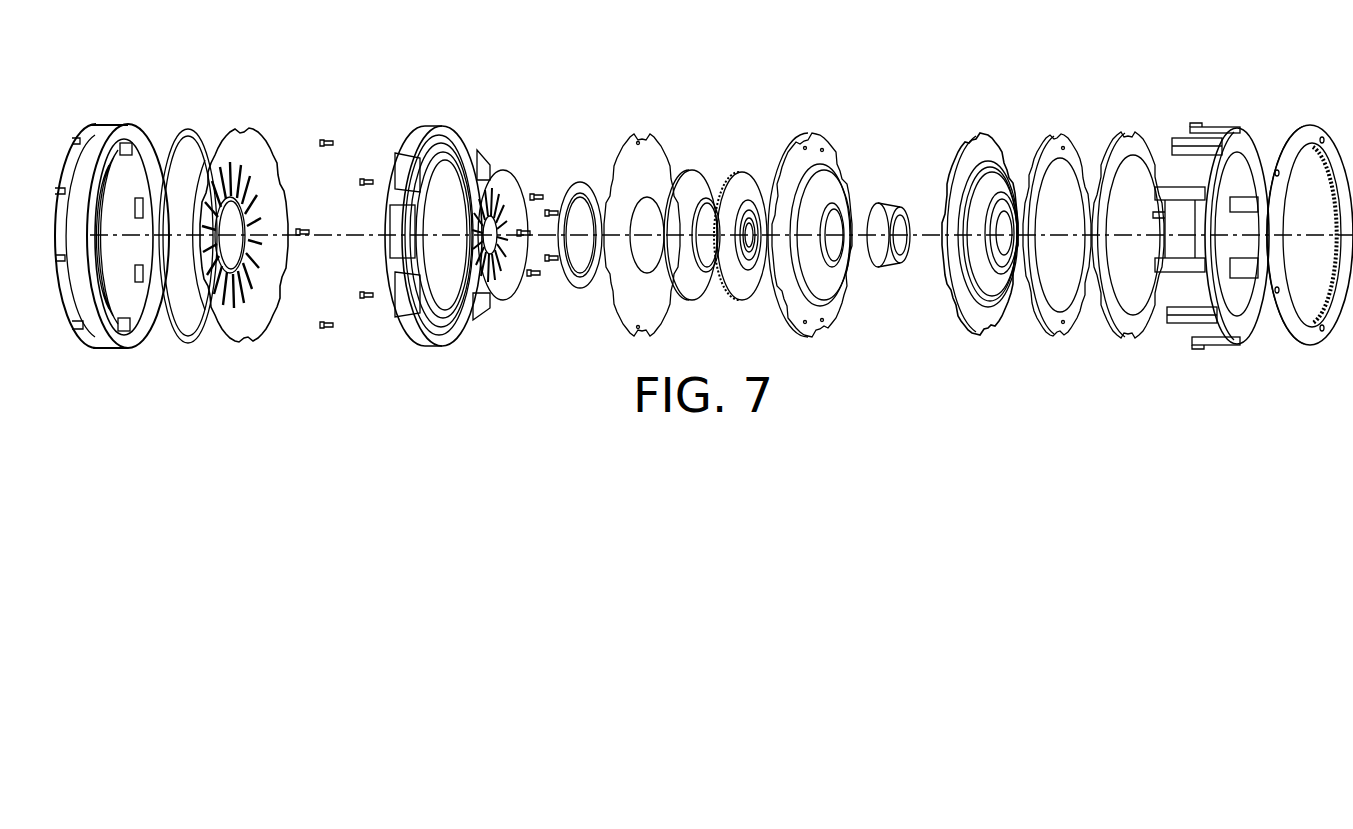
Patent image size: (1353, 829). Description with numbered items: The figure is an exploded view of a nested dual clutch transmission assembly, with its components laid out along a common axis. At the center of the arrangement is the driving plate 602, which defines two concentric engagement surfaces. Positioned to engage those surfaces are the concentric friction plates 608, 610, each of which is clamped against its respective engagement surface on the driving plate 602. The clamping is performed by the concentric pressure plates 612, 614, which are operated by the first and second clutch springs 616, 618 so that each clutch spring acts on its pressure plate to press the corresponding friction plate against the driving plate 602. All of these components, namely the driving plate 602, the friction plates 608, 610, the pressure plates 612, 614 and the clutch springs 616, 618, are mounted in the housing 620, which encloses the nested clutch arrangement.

The driving plate 602 is at (817, 133).
The friction plate 608 is at (752, 292).
The friction plate 610 is at (985, 333).
The pressure plate 612 is at (702, 178).
The pressure plate 614 is at (1068, 133).
The first clutch spring 616 is at (505, 178).
The second clutch spring 618 is at (260, 140).
The housing 620 is at (102, 345).